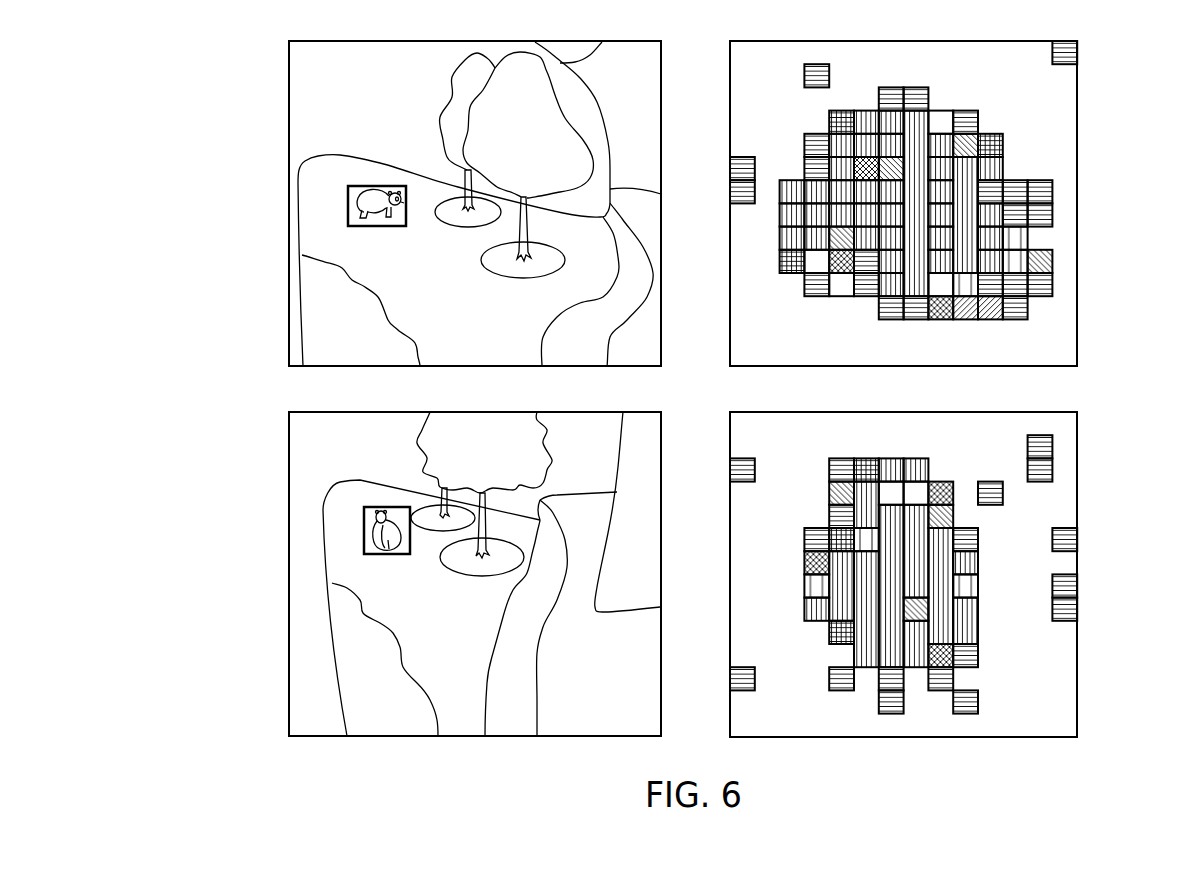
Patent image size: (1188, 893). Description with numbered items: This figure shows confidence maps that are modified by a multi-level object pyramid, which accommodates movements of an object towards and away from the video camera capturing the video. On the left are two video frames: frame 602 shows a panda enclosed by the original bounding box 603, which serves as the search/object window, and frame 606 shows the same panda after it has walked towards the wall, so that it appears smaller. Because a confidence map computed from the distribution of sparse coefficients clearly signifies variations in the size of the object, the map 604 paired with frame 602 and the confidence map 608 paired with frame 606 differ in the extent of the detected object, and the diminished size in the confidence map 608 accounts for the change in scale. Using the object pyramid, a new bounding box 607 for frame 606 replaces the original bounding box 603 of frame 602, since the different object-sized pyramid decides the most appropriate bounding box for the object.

The frame 602 is at (419, 203).
The original bounding box 603 is at (377, 227).
The segmentation map of first image 604 is at (958, 203).
The frame 606 is at (419, 574).
The new bounding box 607 is at (387, 554).
The confidence map 608 is at (958, 574).